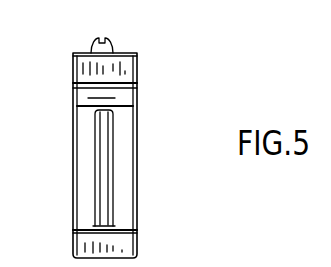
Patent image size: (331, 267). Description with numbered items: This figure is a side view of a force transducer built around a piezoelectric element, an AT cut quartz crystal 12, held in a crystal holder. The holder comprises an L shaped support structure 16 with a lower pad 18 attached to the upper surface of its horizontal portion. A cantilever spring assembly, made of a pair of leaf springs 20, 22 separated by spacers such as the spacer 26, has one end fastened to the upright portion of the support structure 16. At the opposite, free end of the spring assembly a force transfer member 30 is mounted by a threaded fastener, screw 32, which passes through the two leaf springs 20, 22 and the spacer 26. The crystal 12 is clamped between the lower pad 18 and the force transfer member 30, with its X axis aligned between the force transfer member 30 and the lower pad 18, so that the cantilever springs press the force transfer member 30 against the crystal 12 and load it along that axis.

The quartz crystal 12 is at (113, 168).
The L shaped support structure 16 is at (125, 245).
The lower pad 18 is at (120, 227).
The leaf spring 20 is at (74, 88).
The leaf spring 22 is at (80, 52).
The spacer 26 is at (128, 71).
The force transfer member 30 is at (127, 104).
The screw 32 is at (112, 40).